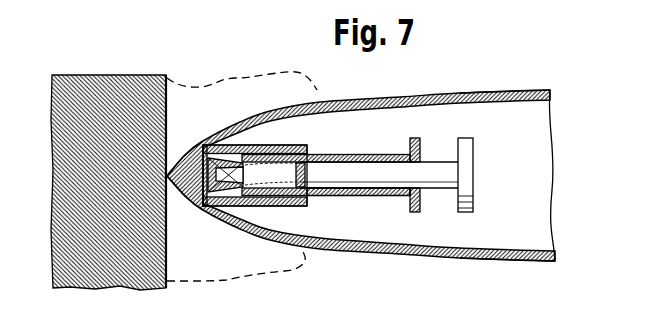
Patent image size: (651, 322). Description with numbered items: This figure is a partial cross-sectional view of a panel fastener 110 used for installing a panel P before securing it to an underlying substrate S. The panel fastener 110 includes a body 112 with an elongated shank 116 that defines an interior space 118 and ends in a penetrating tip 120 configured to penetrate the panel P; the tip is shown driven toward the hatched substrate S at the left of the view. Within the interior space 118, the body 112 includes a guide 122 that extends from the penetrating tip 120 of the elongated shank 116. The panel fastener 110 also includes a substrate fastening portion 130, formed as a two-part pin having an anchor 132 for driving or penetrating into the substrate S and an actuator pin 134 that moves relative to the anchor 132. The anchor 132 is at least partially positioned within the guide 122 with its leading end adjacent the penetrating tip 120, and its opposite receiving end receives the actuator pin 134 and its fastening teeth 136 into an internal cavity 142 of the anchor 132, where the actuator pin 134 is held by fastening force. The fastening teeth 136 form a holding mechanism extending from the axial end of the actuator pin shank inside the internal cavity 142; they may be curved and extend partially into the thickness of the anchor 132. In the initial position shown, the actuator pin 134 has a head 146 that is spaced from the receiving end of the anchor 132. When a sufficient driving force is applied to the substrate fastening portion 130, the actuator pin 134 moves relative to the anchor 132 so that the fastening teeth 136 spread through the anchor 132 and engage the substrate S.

The substrate S is at (55, 136).
The panel P is at (229, 279).
The panel fastener 110 is at (568, 88).
The body 112 is at (556, 257).
The elongated shank 116 is at (492, 90).
The interior space 118 is at (545, 123).
The penetrating tip 120 is at (180, 155).
The guide 122 is at (268, 145).
The substrate fastening portion 130 is at (375, 151).
The anchor 132 is at (335, 155).
The actuator pin 134 is at (446, 175).
The fastening teeth 136 is at (207, 201).
The internal cavity 142 is at (367, 193).
The head 146 is at (477, 151).